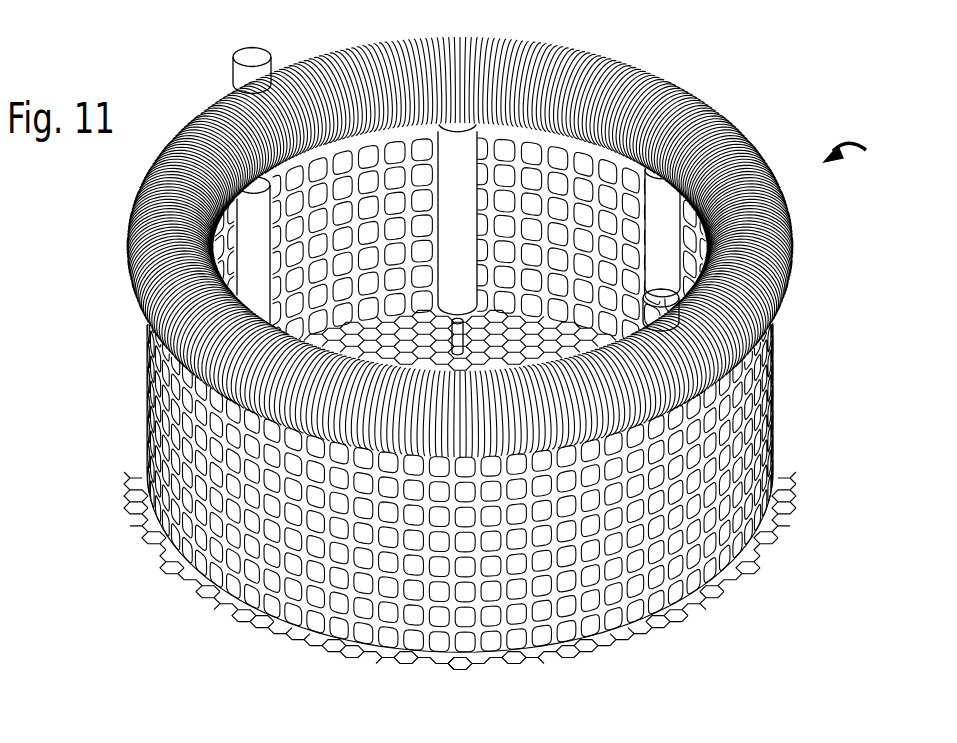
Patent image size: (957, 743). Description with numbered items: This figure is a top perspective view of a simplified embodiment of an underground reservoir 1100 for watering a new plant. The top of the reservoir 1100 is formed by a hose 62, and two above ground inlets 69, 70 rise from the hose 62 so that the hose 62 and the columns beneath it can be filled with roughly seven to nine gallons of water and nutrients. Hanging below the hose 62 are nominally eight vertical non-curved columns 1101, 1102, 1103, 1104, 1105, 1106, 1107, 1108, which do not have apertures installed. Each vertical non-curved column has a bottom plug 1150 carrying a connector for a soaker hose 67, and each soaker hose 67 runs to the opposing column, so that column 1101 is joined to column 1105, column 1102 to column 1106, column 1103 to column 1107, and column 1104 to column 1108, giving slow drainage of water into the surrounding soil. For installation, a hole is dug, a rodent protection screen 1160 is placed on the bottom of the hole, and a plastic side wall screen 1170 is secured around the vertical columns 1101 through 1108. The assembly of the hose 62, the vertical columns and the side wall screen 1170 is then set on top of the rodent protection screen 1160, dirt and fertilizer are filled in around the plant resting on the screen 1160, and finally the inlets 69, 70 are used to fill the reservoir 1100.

The hose 62 is at (778, 243).
The soaker hose 67 is at (467, 340).
The above ground inlet 69 is at (248, 60).
The above ground inlet 70 is at (670, 303).
The underground reservoir 1100 is at (872, 151).
The vertical non-curved column 1101 is at (460, 178).
The vertical non-curved column 1102 is at (658, 208).
The vertical non-curved column 1103 is at (743, 412).
The vertical non-curved column 1104 is at (665, 571).
The vertical non-curved column 1105 is at (465, 620).
The vertical non-curved column 1106 is at (243, 572).
The vertical non-curved column 1107 is at (165, 425).
The vertical non-curved column 1108 is at (61, 216).
The bottom plug 1150 is at (452, 130).
The rodent protection screen 1160 is at (732, 578).
The side wall screen 1170 is at (320, 618).